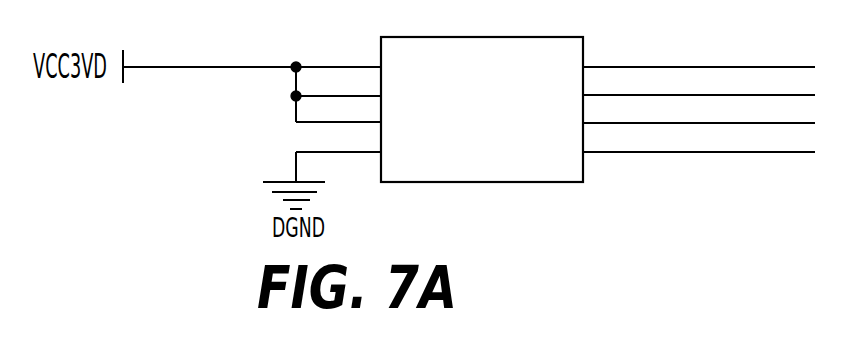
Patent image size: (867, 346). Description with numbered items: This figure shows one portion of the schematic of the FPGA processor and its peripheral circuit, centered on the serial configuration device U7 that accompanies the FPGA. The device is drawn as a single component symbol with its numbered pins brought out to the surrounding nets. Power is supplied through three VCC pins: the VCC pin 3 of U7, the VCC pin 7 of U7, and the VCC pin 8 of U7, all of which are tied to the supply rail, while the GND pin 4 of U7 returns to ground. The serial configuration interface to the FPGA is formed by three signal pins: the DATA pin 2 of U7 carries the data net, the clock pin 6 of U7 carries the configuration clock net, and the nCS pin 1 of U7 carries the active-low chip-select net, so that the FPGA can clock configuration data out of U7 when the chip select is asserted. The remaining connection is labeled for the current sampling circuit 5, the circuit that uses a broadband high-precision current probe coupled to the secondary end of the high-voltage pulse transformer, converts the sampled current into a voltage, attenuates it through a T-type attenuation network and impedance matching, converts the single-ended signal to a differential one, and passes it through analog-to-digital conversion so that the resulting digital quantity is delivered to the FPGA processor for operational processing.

The VCC pin 3 of U7 3 is at (338, 56).
The VCC pin 7 of U7 7 is at (338, 81).
The VCC pin 8 of U7 8 is at (338, 109).
The GND pin 4 of U7 4 is at (338, 138).
The DATA pin 2 of U7 (DATA0 net) 2 is at (699, 56).
The DCLK pin 6 of U7 (DCLK net) 6 is at (699, 84).
The nCS pin 1 of U7 (nCS0 net) 1 is at (699, 111).
The current sampling circuit 5 is at (699, 139).
The EPCS416 configuration device U7 is at (482, 109).